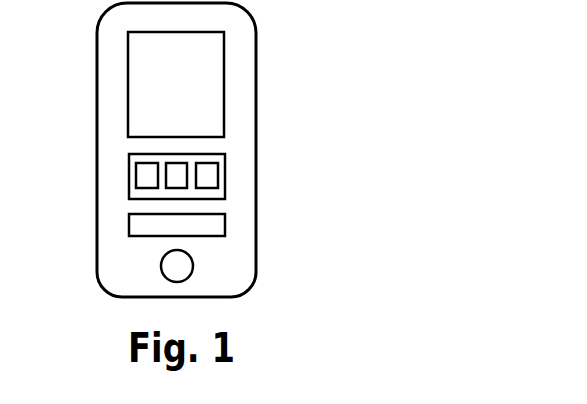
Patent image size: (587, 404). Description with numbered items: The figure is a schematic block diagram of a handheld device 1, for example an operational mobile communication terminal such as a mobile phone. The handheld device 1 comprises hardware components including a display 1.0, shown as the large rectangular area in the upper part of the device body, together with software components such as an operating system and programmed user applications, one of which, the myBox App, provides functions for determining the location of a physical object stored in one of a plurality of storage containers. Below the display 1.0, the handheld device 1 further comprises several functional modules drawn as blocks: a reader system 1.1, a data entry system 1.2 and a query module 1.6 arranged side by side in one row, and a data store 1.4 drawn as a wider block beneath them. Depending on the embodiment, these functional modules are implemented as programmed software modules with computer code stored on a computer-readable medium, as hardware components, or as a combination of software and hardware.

The handheld device 1 is at (243, 229).
The display 1.0 is at (214, 97).
The reader system 1.1 is at (137, 177).
The data entry system 1.2 is at (105, 157).
The query module 1.6 is at (208, 175).
The data store 1.4 is at (133, 227).